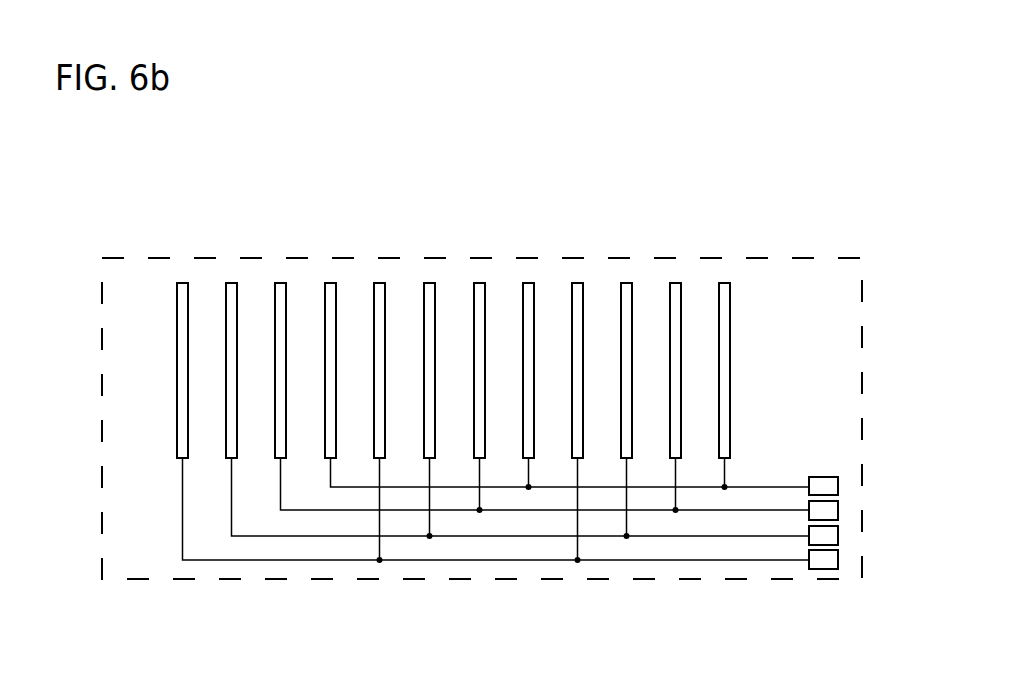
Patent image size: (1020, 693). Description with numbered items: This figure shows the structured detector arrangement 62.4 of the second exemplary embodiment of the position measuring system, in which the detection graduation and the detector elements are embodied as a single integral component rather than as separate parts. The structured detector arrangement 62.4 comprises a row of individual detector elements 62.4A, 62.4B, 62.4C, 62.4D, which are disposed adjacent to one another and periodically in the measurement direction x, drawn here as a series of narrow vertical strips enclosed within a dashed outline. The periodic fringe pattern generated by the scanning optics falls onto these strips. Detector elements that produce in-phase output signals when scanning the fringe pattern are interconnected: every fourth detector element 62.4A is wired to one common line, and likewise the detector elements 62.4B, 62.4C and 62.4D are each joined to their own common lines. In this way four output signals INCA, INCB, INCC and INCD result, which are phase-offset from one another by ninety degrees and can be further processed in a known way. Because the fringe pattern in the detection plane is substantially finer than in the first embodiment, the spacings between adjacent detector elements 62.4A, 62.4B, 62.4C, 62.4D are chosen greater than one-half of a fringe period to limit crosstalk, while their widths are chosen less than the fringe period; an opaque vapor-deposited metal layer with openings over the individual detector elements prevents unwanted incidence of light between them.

The structured detector arrangement 62.4 is at (101, 407).
The detector element 62.4A is at (186, 283).
The detector element 62.4B is at (232, 283).
The detector element 62.4C is at (281, 283).
The detector element 62.4D is at (331, 283).
The output signal INCA is at (831, 558).
The output signal INCB is at (831, 535).
The output signal INCC is at (826, 512).
The output signal INCD is at (823, 492).